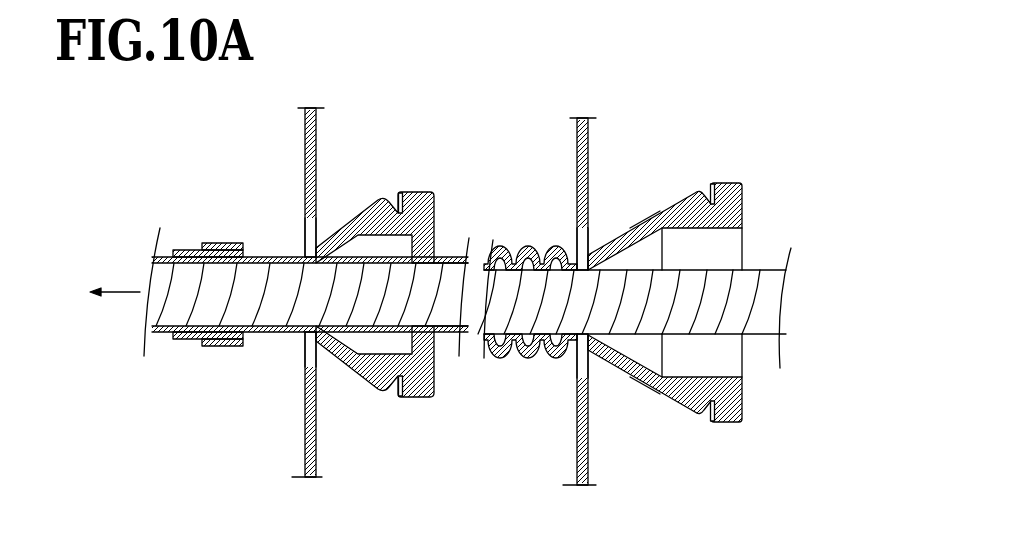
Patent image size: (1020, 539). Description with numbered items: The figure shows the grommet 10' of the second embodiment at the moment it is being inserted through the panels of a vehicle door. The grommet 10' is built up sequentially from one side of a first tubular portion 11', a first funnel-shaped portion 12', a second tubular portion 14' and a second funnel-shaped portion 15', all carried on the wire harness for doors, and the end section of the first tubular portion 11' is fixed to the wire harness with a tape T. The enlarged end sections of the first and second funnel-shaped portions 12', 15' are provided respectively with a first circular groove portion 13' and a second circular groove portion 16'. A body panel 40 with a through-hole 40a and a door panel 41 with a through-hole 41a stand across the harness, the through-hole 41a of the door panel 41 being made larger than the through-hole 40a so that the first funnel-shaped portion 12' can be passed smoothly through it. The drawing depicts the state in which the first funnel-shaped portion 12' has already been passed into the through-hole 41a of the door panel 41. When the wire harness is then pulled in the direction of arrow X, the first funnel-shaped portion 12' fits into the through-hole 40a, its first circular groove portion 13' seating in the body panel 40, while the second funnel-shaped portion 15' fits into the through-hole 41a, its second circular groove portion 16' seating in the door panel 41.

The tape T is at (192, 250).
The arrow X is at (104, 292).
The grommet 10' is at (344, 296).
The first tubular portion 11' is at (209, 338).
The first funnel-shaped portion 12' is at (375, 322).
The first circular groove portion 13' is at (387, 346).
The second tubular portion 14' is at (451, 360).
The second funnel-shaped portion 15' is at (665, 338).
The second circular groove portion 16' is at (718, 355).
The body panel 40 is at (267, 311).
The through-hole 40a is at (304, 368).
The door panel 41 is at (546, 317).
The through-hole 41a is at (578, 368).